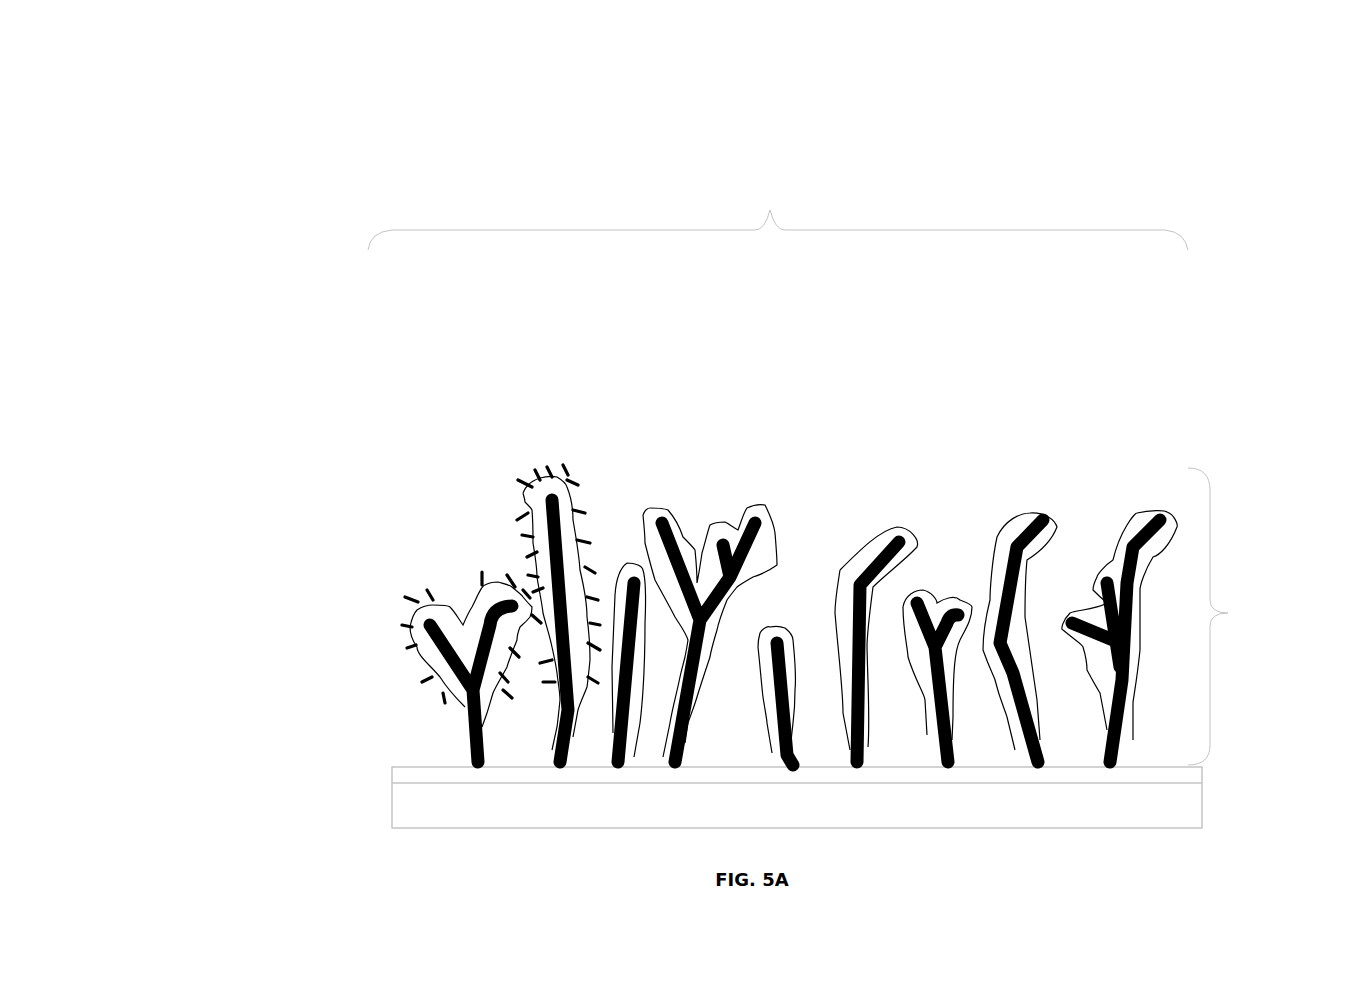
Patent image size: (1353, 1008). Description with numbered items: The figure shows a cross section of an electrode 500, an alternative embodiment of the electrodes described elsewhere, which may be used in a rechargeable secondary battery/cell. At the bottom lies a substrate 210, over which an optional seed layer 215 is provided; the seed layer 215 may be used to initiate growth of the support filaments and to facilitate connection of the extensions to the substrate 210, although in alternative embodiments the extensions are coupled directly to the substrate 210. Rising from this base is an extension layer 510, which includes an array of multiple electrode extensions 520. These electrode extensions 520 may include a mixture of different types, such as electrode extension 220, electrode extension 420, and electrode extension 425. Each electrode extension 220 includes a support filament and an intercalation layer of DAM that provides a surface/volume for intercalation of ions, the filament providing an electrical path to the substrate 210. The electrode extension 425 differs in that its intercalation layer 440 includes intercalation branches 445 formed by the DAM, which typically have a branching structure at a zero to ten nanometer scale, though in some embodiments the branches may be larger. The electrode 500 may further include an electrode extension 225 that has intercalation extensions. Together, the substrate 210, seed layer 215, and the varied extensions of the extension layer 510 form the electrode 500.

The electrode 500 is at (450, 178).
The electrode extensions 520 is at (778, 202).
The extension layer 510 is at (1247, 616).
The electrode extension 425 is at (442, 577).
The electrode extension 420 is at (1145, 497).
The electrode extension 225 is at (518, 470).
The electrode extension 220 is at (1018, 505).
The intercalation branches 445 is at (533, 560).
The intercalation layer 440 is at (418, 657).
The seed layer 215 is at (403, 777).
The substrate 210 is at (403, 808).